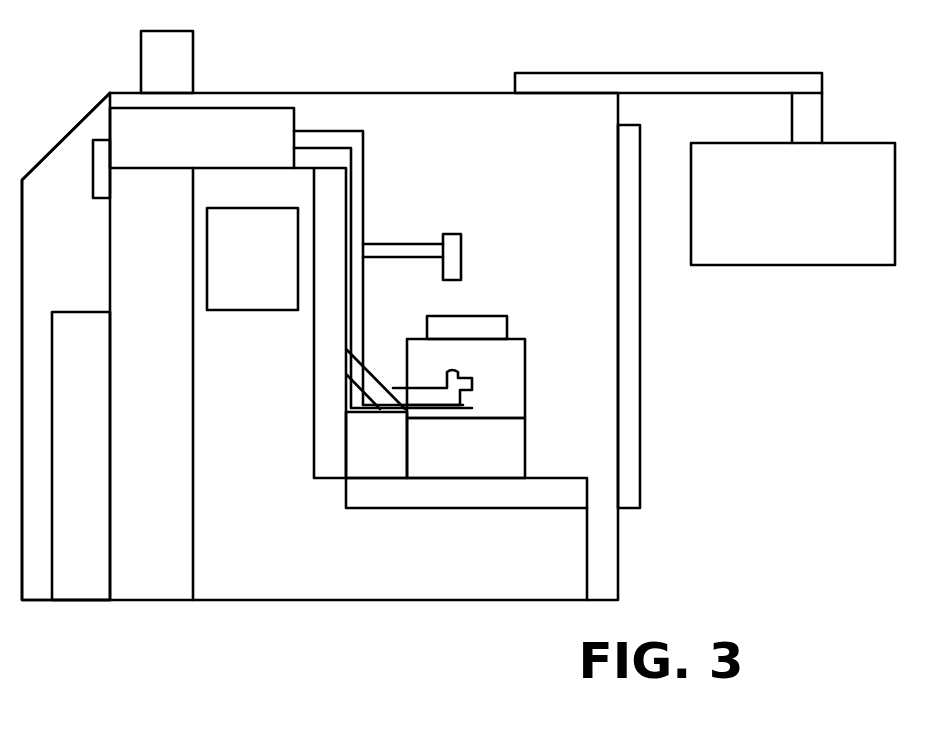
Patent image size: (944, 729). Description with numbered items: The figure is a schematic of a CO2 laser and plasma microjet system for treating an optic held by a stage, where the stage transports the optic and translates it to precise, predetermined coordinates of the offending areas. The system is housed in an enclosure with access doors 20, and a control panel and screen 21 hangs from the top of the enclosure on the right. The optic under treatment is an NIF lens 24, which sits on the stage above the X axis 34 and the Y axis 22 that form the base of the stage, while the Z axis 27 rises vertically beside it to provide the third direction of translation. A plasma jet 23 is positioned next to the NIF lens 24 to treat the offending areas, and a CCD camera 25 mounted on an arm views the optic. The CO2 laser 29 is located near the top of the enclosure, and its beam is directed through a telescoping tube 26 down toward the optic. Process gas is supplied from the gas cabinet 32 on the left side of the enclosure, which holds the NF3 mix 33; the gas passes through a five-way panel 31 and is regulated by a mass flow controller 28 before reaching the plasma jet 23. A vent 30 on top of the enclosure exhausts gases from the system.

The access doors 20 is at (640, 413).
The control panel and screen 21 is at (822, 265).
The Y axis 22 is at (537, 478).
The plasma jet 23 is at (473, 383).
The NIF lens 24 is at (478, 315).
The CCD camera 25 is at (452, 234).
The telescoping tube 26 is at (363, 157).
The Z axis 27 is at (325, 378).
The mass flow controller 28 is at (241, 271).
The CO2 laser 29 is at (196, 156).
The vent 30 is at (193, 50).
The 5-way panel 31 is at (93, 148).
The gas cabinet 32 is at (49, 251).
The NF3 mix 33 is at (69, 431).
The X axis 34 is at (452, 458).